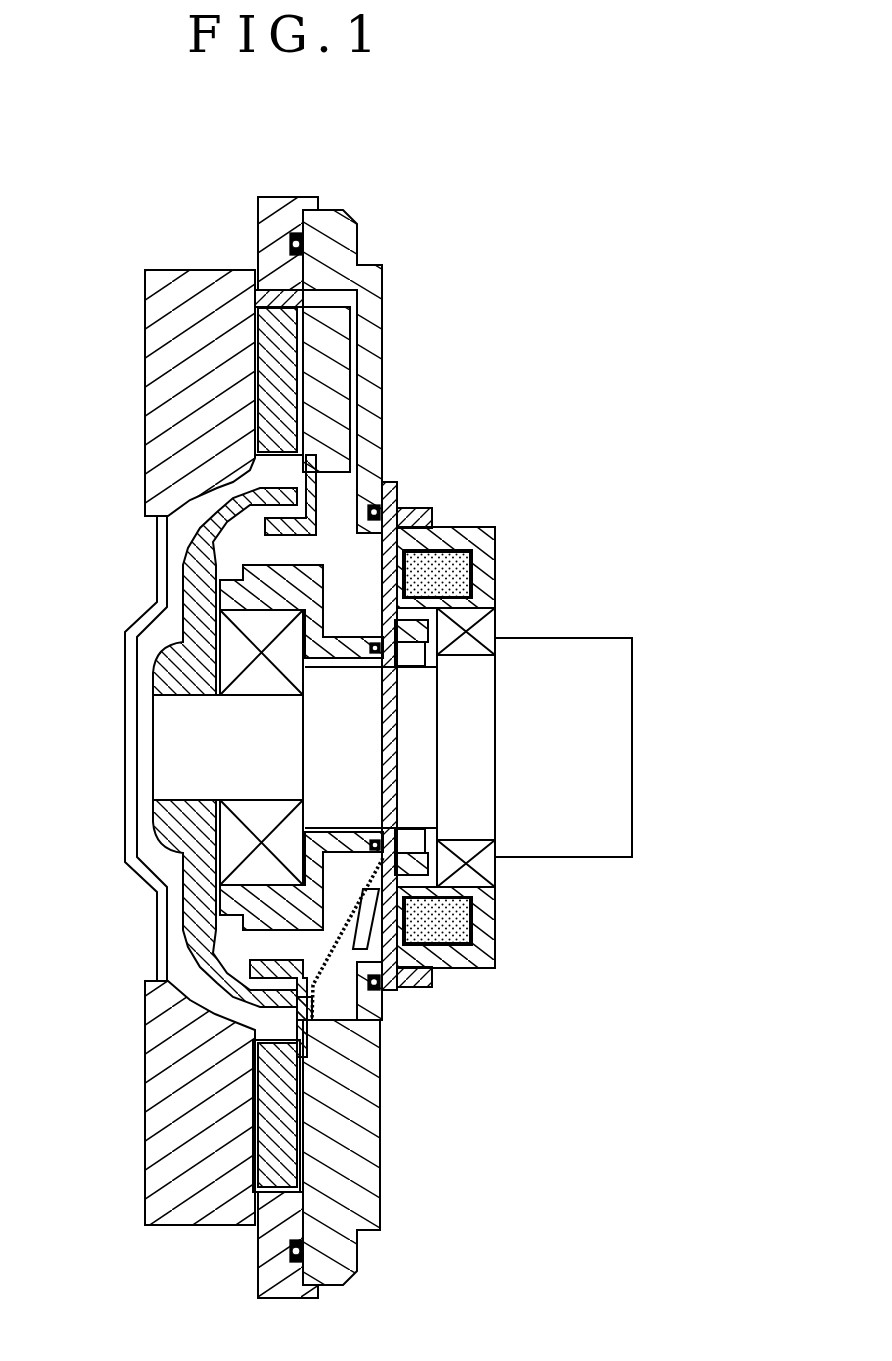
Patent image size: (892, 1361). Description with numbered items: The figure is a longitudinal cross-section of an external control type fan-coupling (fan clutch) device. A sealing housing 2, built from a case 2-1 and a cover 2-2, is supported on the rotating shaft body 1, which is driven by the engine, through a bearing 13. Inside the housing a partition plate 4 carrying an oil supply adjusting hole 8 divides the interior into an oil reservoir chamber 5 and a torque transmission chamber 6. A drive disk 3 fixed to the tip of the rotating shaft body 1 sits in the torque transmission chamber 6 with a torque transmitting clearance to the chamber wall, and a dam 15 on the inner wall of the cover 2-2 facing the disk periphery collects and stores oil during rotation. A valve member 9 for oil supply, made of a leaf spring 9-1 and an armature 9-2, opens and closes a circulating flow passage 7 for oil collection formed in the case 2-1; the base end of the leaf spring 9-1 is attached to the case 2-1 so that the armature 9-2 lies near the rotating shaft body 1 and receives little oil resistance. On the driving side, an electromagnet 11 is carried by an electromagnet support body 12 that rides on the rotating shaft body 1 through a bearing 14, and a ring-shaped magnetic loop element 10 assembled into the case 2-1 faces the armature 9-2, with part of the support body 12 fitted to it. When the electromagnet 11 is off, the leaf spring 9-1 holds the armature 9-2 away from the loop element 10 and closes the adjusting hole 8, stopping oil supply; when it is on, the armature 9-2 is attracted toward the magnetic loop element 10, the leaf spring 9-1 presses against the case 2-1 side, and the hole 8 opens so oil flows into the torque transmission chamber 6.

The rotating shaft body 1 is at (584, 652).
The sealing housing 2 is at (412, 231).
The case 2-1 is at (373, 338).
The cover 2-2 is at (152, 355).
The drive disk 3 is at (272, 352).
The partition plate 4 is at (312, 497).
The oil reservoir chamber 5 is at (270, 546).
The torque transmission chamber 6 is at (270, 1138).
The circulating flow passage 7 is at (356, 322).
The oil supply adjusting hole 8 is at (295, 1012).
The valve member 9 is at (331, 983).
The leaf spring 9-1 is at (315, 955).
The armature 9-2 is at (384, 992).
The magnetic loop element 10 is at (426, 509).
The electromagnet 11 is at (468, 570).
The electromagnet support body 12 is at (496, 913).
The bearing 13 is at (233, 645).
The bearing 14 is at (486, 867).
The dam 15 is at (270, 345).